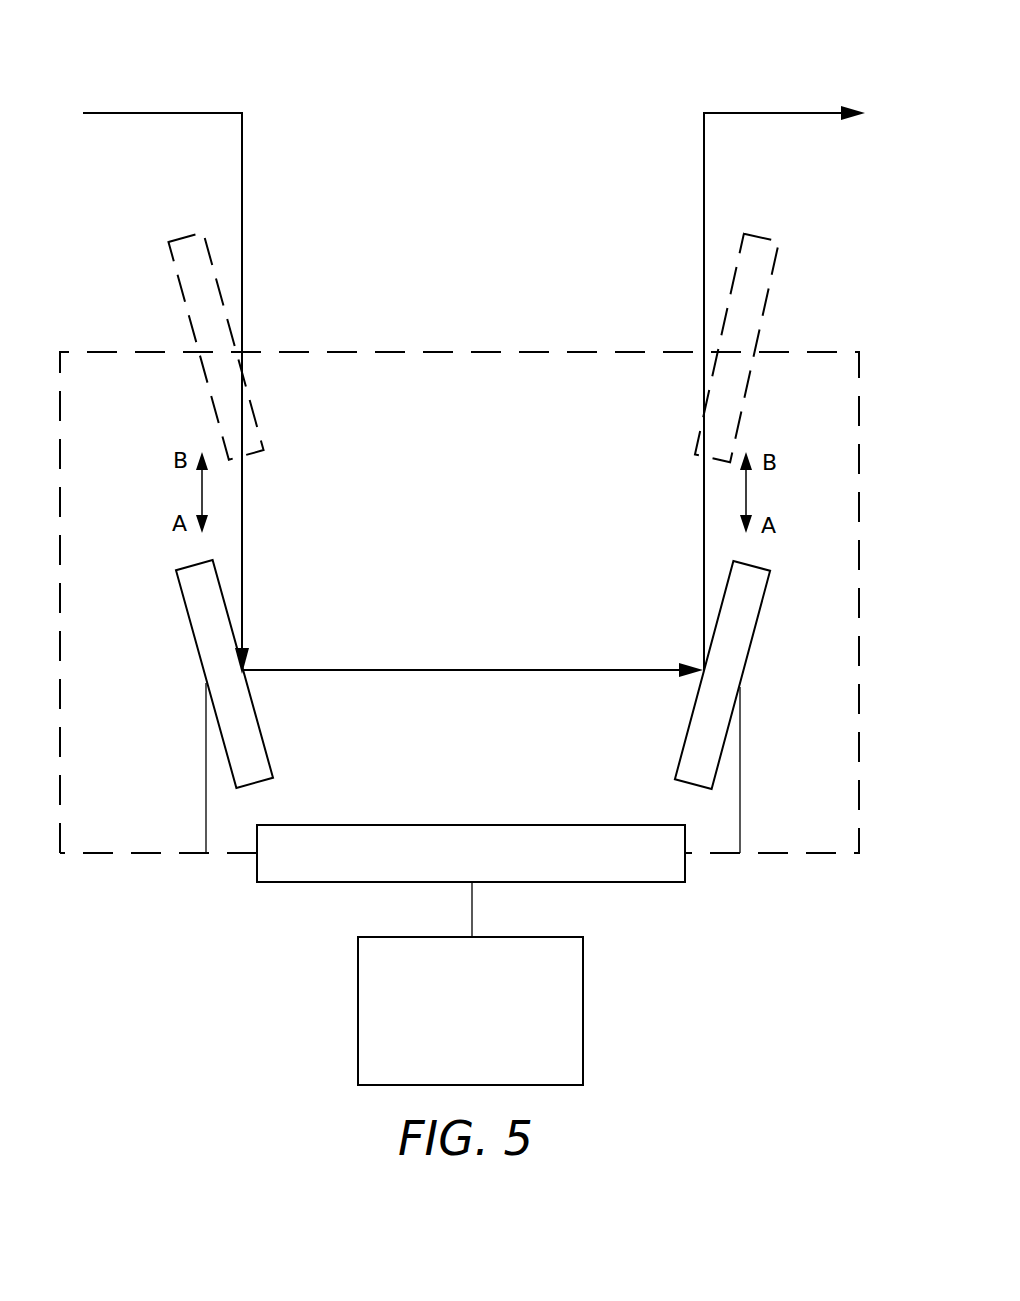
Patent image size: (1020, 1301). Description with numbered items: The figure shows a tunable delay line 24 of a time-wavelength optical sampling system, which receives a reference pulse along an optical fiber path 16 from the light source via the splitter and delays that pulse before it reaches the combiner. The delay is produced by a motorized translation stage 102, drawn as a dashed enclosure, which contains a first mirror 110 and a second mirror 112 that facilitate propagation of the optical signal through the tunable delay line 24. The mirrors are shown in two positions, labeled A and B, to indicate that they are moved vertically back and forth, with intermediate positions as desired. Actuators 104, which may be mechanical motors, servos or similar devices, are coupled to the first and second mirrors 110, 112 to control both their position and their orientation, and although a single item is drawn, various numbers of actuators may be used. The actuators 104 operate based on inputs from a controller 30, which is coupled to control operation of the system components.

The optical fiber path 16 is at (142, 82).
The tunable delay line 24 is at (634, 60).
The controller 30 is at (583, 1011).
The motorized translation stage 102 is at (298, 950).
The actuators 104 is at (515, 825).
The first mirror 110 is at (190, 236).
The second mirror 112 is at (753, 236).